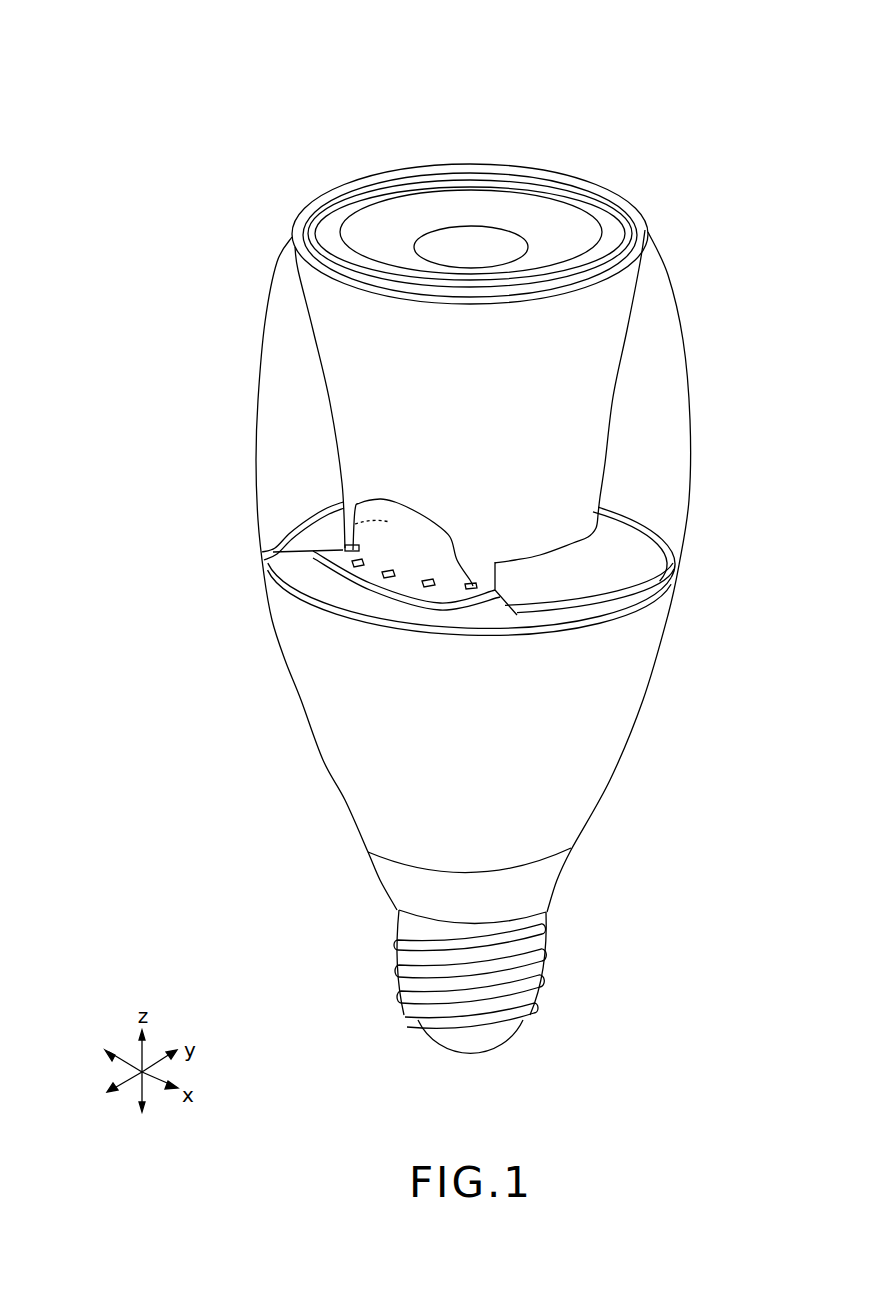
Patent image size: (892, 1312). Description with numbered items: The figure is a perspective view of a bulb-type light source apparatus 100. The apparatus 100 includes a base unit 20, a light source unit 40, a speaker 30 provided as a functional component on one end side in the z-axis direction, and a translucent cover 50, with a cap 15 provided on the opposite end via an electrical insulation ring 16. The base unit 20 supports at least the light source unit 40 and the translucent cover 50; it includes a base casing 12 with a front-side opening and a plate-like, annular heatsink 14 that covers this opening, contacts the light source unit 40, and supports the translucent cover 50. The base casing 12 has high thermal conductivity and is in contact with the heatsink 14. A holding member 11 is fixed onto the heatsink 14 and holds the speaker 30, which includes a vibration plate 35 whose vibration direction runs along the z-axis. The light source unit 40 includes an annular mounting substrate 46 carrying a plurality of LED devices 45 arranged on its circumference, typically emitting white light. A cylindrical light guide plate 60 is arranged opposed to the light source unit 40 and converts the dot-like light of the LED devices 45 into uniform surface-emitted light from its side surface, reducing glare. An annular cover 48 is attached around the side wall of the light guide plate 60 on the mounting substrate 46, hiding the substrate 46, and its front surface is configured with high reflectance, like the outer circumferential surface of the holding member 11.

The light source apparatus 100 is at (487, 120).
The translucent cover 50 is at (258, 322).
The light guide plate 60 is at (593, 410).
The speaker 30 is at (427, 206).
The vibration plate 35 is at (552, 210).
The annular cover 48 is at (634, 540).
The base unit 20 is at (168, 472).
The holding member 11 is at (340, 532).
The heatsink 14 is at (278, 565).
The base casing 12 is at (282, 598).
The light source unit 40 is at (216, 642).
The mounting substrate 46 is at (348, 583).
The LED devices 45 is at (393, 583).
The electrical insulation ring 16 is at (548, 908).
The cap 15 is at (548, 955).